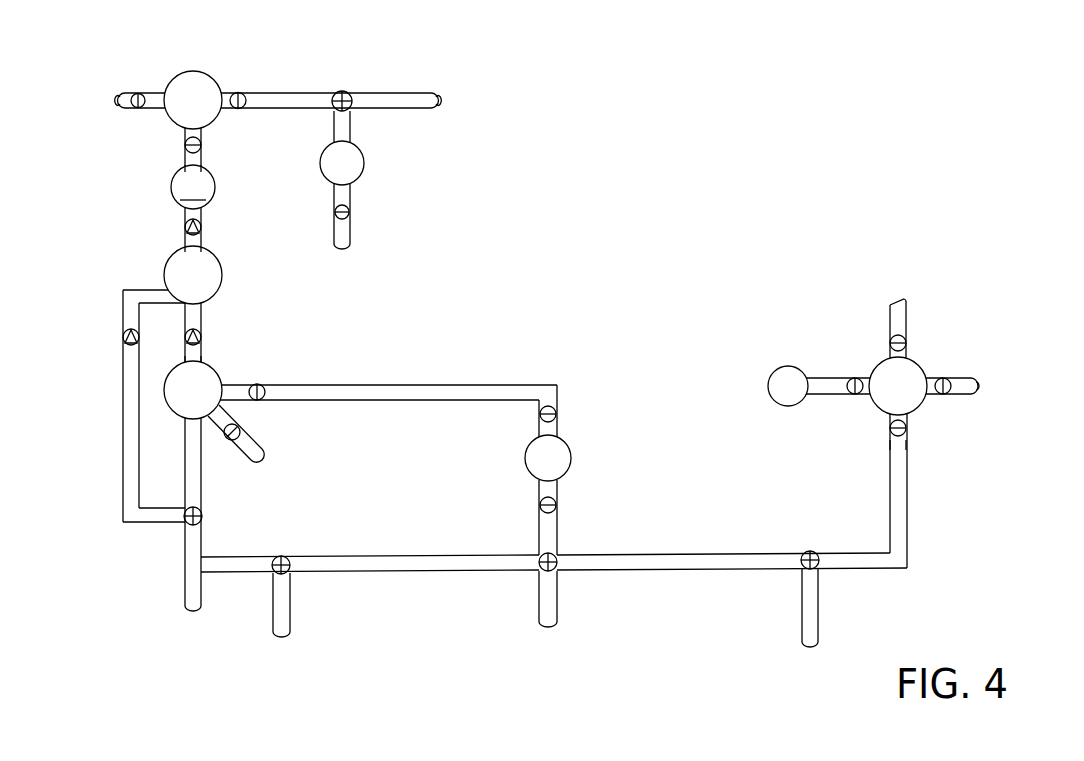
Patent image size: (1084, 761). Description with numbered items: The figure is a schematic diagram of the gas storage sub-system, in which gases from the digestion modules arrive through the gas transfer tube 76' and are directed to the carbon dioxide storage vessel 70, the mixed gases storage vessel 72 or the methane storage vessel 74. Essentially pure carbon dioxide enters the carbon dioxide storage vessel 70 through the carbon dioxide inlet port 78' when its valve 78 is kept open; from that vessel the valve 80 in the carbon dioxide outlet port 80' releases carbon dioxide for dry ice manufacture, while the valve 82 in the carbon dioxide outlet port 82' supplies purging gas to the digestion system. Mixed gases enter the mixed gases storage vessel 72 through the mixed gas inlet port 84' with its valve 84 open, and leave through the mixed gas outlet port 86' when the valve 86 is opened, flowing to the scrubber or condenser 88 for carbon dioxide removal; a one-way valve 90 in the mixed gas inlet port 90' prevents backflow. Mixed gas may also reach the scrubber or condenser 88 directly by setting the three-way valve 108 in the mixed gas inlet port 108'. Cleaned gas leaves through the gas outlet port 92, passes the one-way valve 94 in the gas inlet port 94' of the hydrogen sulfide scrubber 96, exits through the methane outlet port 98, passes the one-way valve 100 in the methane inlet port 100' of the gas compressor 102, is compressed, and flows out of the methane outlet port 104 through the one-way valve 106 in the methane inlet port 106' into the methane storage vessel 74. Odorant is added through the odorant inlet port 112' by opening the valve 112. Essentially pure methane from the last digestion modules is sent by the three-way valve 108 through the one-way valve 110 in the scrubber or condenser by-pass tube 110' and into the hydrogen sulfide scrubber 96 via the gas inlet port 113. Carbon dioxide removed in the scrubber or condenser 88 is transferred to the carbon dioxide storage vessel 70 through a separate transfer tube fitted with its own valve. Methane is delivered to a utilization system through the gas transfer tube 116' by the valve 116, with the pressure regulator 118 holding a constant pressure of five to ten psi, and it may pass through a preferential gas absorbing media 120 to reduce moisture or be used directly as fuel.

The carbon dioxide storage vessel 70 is at (884, 372).
The mixed gases storage vessel 72 is at (555, 470).
The methane storage vessel 74 is at (196, 84).
The gas transfer tube 76' is at (554, 520).
The valve 78 is at (925, 461).
The carbon dioxide inlet port 78' is at (928, 436).
The valve 80 is at (833, 408).
The carbon dioxide outlet port 80' is at (822, 407).
The valve 82 is at (990, 367).
The carbon dioxide outlet port 82' is at (958, 363).
The valve 84 is at (518, 519).
The mixed gas inlet port 84' is at (517, 517).
The valve 86 is at (577, 396).
The mixed gas outlet port 86' is at (580, 411).
The scrubber or condenser 88 is at (190, 412).
The one-way valve 90 is at (296, 372).
The mixed gas inlet port 90' is at (388, 406).
The gas outlet port 92 is at (200, 362).
The one-way valve 94 is at (173, 348).
The gas inlet port 94' is at (222, 332).
The hydrogen sulfide scrubber 96 is at (206, 280).
The methane outlet port 98 is at (212, 266).
The one-way valve 100 is at (232, 228).
The methane inlet port 100' is at (158, 191).
The gas compressor 102 is at (202, 192).
The methane outlet port 104 is at (196, 180).
The one-way valve 106 is at (155, 140).
The methane inlet port 106' is at (230, 147).
The three-way valve 108 is at (164, 539).
The mixed gas inlet port 108' is at (199, 514).
The one-way valve 110 is at (96, 318).
The scrubber or condenser by-pass tube 110' is at (100, 406).
The valve 112 is at (110, 75).
The odorant inlet port 112' is at (161, 65).
The gas inlet port 113 is at (164, 292).
The valve 116 is at (386, 75).
The gas transfer tube 116' is at (331, 70).
The pressure regulator 118 is at (245, 97).
The preferential gas absorbing media 120 is at (348, 162).